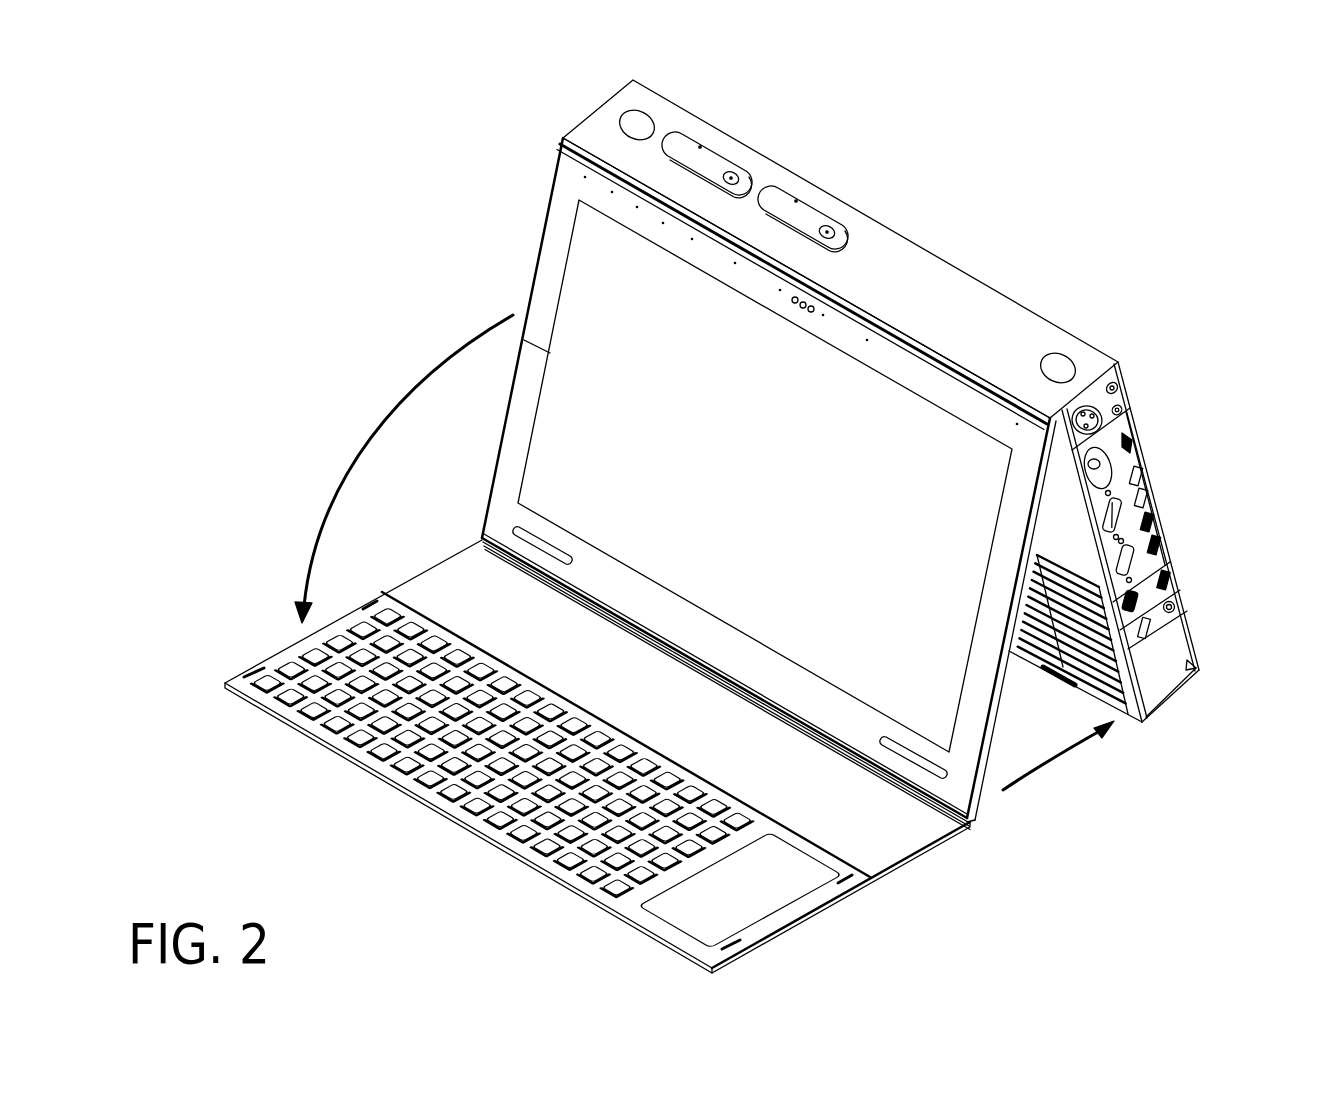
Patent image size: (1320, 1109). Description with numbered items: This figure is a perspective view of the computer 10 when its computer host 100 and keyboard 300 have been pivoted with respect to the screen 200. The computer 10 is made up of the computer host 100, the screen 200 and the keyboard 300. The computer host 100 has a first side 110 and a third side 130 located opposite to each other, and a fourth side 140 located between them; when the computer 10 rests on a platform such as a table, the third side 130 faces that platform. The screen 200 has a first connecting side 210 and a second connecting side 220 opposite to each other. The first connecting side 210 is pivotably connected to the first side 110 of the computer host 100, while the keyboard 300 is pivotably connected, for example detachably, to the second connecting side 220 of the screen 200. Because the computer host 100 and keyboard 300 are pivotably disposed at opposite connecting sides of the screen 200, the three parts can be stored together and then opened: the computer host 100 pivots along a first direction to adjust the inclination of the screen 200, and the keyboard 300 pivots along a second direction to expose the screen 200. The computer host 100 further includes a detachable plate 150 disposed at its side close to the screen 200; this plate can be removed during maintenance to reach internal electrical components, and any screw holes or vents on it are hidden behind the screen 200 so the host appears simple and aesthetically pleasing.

The computer 10 is at (153, 171).
The computer host 100 is at (1116, 299).
The first side 110 is at (913, 272).
The third side 130 is at (1178, 694).
The fourth side 140 is at (1168, 642).
The detachable plate 150 is at (1131, 714).
The screen 200 is at (962, 783).
The first connecting side 210 is at (582, 139).
The second connecting side 220 is at (484, 540).
The keyboard 300 is at (684, 938).